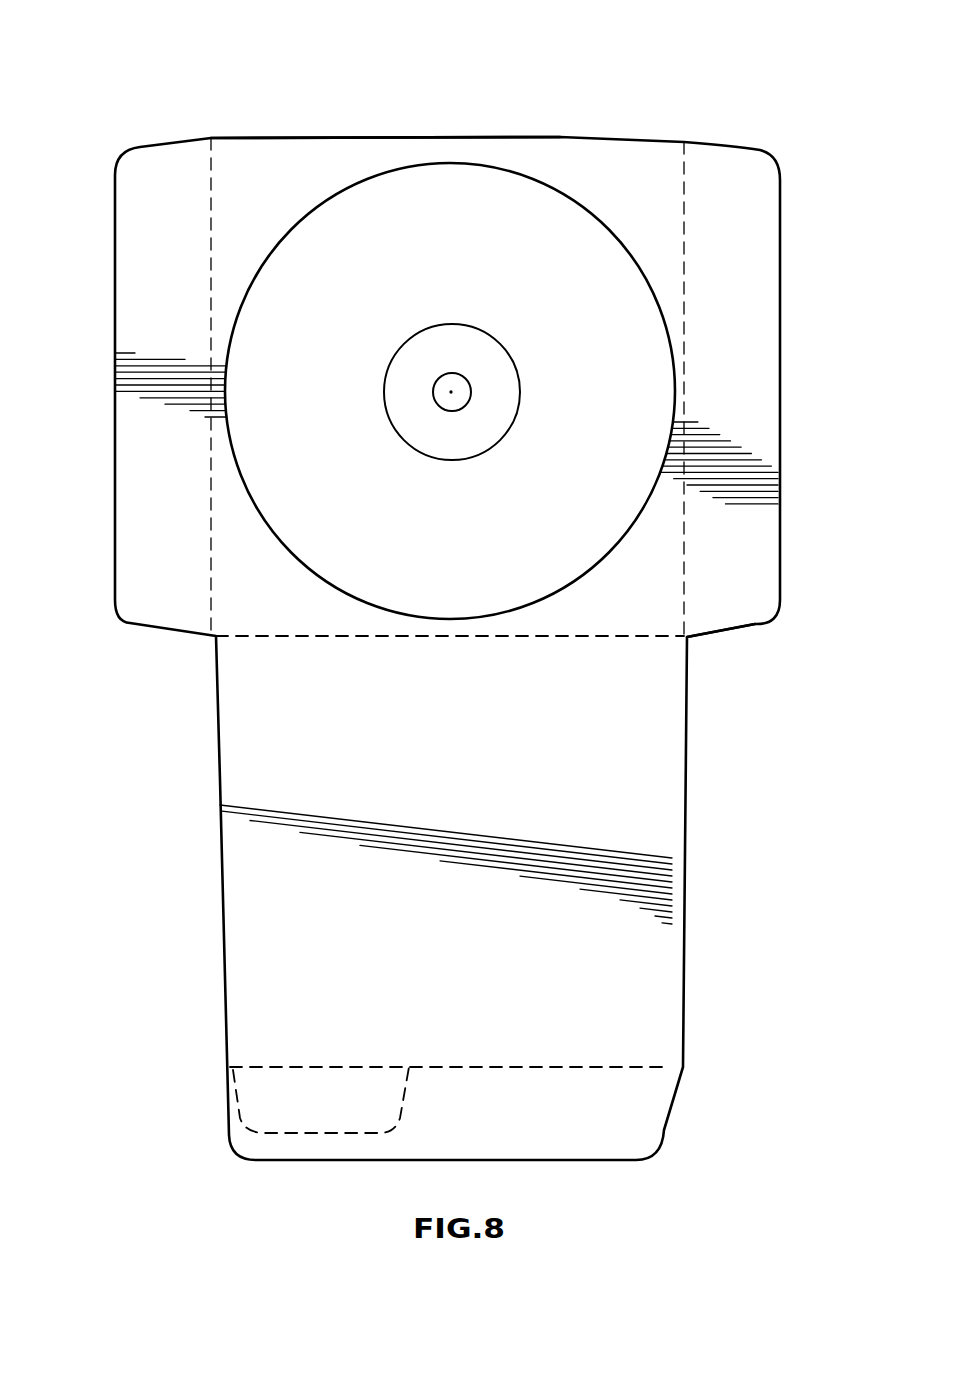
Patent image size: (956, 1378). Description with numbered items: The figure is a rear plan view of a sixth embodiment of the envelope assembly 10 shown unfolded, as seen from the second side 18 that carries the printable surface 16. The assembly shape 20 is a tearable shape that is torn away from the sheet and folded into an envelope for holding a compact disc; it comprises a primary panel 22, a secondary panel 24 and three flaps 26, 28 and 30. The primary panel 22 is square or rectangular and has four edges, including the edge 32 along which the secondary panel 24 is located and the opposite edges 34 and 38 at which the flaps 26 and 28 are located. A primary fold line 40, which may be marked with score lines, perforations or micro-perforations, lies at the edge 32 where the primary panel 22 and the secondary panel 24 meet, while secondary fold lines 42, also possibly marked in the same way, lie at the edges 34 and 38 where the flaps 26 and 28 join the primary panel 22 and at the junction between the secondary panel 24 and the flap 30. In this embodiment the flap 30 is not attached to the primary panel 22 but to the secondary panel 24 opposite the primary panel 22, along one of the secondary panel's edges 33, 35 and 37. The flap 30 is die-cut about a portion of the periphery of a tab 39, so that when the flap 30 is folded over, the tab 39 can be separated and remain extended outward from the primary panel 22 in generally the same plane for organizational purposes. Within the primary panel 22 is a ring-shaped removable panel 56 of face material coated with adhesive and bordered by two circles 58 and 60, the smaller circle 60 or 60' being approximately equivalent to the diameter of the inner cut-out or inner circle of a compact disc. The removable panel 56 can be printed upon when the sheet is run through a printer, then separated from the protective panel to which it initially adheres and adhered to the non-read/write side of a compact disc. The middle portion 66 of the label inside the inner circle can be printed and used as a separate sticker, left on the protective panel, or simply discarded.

The envelope assembly 10 is at (612, 100).
The printable surface 16 is at (662, 165).
The second side 18 is at (432, 984).
The assembly shape 20 is at (427, 136).
The primary panel 22 is at (653, 600).
The secondary panel 24 is at (660, 828).
The flap 26 is at (742, 518).
The flap 28 is at (147, 465).
The flap 30 is at (648, 1112).
The edge 32 is at (262, 640).
The edge 33 is at (222, 930).
The edge 34 is at (685, 382).
The edge 35 is at (250, 1072).
The edge 37 is at (672, 960).
The edge 38 is at (212, 513).
The tab 39 is at (392, 1090).
The primary fold line 40 is at (626, 645).
The secondary fold lines 42 is at (208, 442).
The removable panel 56 is at (310, 232).
The circle 58 is at (667, 335).
The circle 60 is at (427, 371).
The circle 60' is at (427, 392).
The middle portion 66 is at (460, 403).